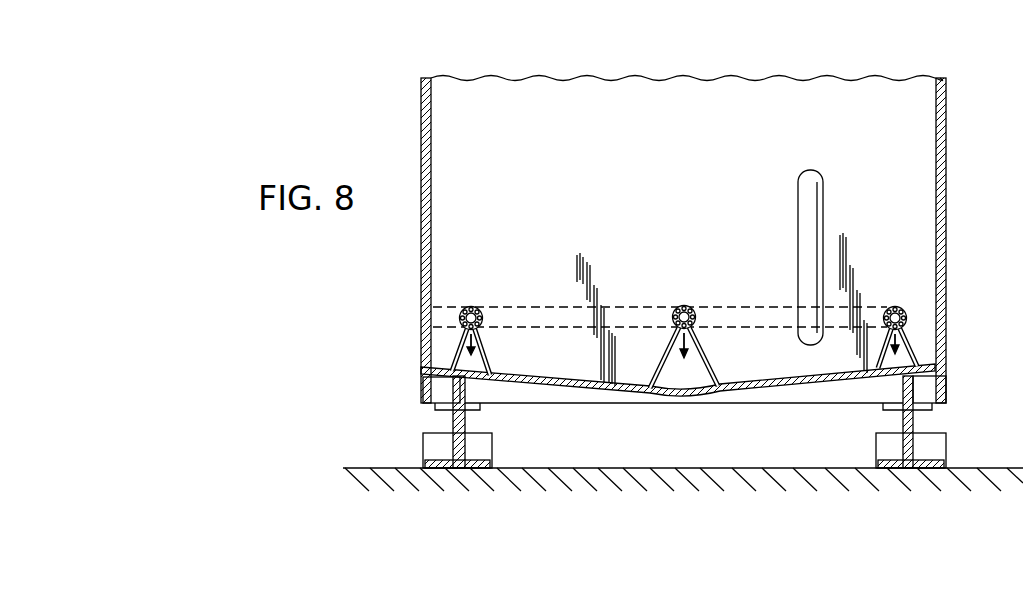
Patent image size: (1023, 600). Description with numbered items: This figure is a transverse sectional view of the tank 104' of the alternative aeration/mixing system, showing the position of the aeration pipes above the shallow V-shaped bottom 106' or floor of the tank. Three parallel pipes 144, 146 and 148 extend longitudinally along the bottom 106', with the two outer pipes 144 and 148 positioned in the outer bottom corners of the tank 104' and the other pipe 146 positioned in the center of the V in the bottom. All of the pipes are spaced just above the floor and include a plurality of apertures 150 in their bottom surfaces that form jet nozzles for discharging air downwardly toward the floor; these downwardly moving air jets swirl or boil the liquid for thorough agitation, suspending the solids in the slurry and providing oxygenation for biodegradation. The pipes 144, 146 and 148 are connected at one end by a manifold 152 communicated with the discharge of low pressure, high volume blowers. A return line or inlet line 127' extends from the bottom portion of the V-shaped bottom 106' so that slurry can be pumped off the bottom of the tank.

The tank 104' is at (683, 240).
The bottom 106' is at (678, 407).
The return line or inlet line 127' is at (775, 257).
The pipe 144 is at (462, 312).
The pipe 146 is at (687, 306).
The pipe 148 is at (900, 308).
The apertures 150 is at (460, 340).
The manifold 152 is at (624, 310).